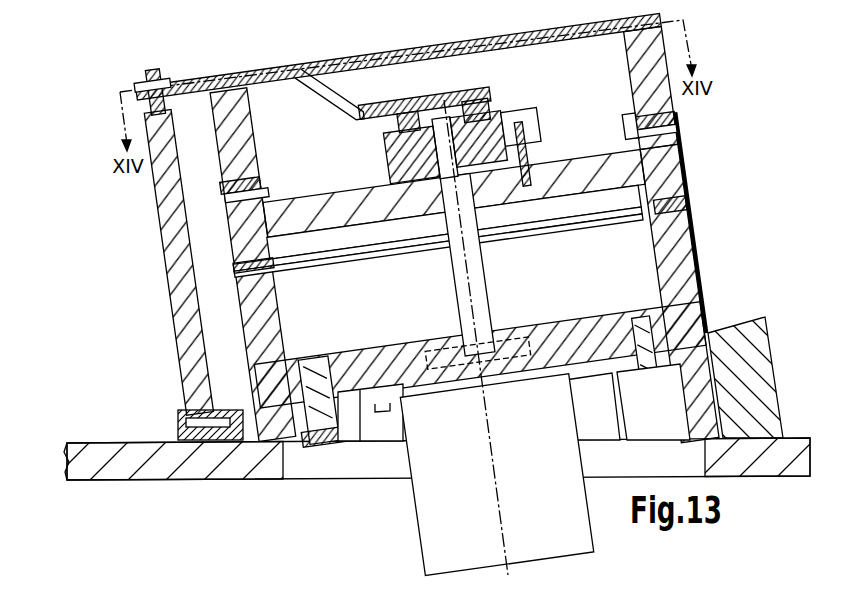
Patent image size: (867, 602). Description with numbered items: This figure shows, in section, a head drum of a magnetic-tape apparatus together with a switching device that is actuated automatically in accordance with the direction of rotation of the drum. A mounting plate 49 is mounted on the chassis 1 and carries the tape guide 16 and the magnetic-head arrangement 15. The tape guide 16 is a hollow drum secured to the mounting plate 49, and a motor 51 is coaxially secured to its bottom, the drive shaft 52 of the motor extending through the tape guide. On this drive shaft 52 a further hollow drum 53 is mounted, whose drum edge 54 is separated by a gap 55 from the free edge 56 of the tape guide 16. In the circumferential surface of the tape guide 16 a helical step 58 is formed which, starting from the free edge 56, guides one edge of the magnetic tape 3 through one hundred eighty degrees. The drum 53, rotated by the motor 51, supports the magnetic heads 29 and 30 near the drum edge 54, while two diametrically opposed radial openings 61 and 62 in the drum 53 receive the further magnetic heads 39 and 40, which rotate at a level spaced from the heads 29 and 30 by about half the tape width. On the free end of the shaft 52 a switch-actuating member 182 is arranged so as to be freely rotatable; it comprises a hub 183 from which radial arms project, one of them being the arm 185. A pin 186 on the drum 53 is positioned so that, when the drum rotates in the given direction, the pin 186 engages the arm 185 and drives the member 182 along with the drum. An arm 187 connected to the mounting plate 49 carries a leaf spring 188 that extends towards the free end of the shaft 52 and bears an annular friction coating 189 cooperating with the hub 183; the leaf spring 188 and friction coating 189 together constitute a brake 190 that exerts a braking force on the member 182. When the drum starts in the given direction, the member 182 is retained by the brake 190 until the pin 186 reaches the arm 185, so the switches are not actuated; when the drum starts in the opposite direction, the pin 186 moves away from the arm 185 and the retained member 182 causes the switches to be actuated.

The chassis 1 is at (175, 470).
The magnetic tape 3 is at (682, 128).
The magnetic-head arrangement 15 is at (695, 158).
The tape guide 16 is at (710, 270).
The magnetic head 29 is at (235, 268).
The magnetic head 30 is at (688, 205).
The magnetic head 39 is at (670, 124).
The magnetic head 40 is at (223, 187).
The mounting plate 49 is at (765, 355).
The motor 51 is at (425, 513).
The drive shaft 52 is at (478, 282).
The drum 53 is at (215, 108).
The drum edge 54 is at (413, 243).
The gap 55 is at (381, 250).
The free edge 56 is at (322, 263).
The helical step 58 is at (703, 252).
The radial opening 61 is at (637, 127).
The radial opening 62 is at (262, 185).
The switch-actuating member 182 is at (545, 105).
The hub 183 is at (392, 158).
The radial arm 185 is at (537, 147).
The pin 186 is at (537, 120).
The arm 187 is at (185, 298).
The leaf spring 188 is at (345, 100).
The annular friction coating 189 is at (490, 105).
The brake 190 is at (478, 80).